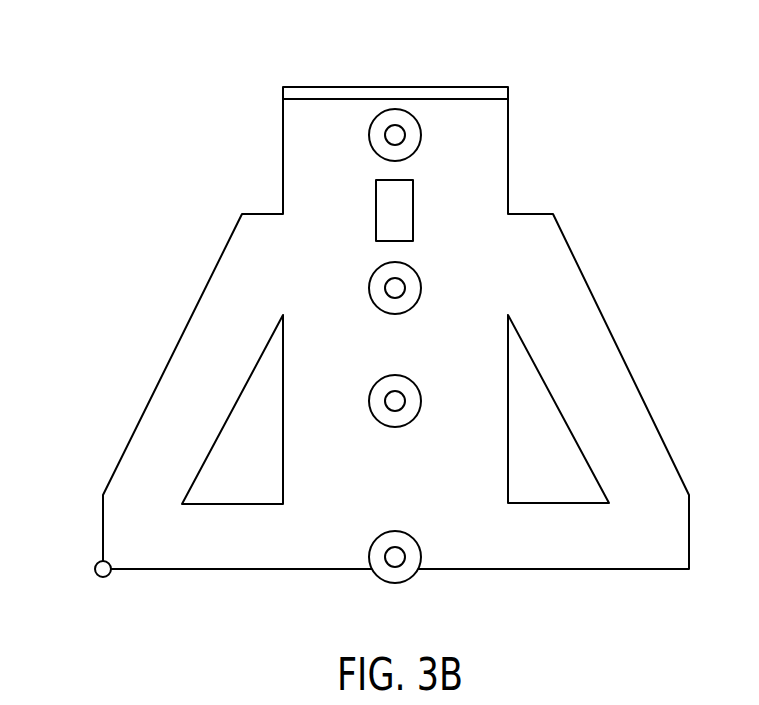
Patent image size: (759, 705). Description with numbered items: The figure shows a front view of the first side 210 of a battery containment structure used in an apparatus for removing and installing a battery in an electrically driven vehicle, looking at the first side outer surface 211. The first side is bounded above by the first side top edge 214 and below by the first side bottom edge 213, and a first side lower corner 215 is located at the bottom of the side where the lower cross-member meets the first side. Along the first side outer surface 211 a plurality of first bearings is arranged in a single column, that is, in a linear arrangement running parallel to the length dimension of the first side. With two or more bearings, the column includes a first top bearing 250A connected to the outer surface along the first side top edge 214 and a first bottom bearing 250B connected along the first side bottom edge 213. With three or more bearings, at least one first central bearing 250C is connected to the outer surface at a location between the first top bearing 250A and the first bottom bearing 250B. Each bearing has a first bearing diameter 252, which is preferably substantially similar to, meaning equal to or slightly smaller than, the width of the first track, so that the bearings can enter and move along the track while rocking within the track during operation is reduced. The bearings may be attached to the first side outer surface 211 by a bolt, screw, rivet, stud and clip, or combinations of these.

The first side 210 is at (638, 97).
The first side outer surface 211 is at (480, 280).
The first side bottom edge 213 is at (689, 583).
The first side top edge 214 is at (508, 75).
The first side lower corner 215 is at (96, 563).
The first top bearing 250A is at (369, 133).
The first bottom bearing 250B is at (369, 551).
The first central bearing 250C is at (370, 398).
The first bearing diameter 252 is at (420, 410).